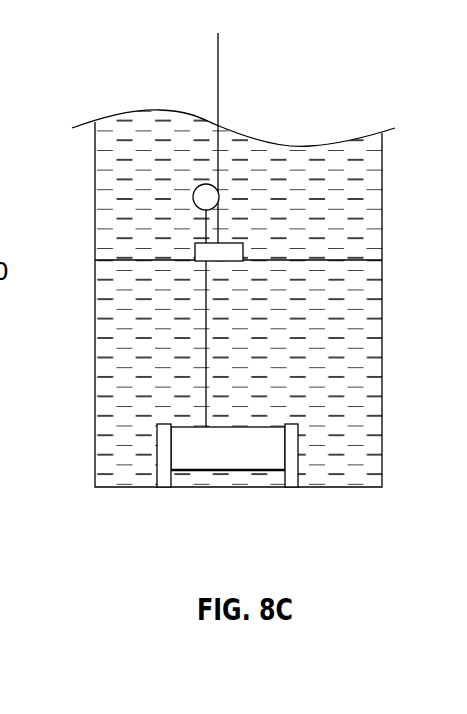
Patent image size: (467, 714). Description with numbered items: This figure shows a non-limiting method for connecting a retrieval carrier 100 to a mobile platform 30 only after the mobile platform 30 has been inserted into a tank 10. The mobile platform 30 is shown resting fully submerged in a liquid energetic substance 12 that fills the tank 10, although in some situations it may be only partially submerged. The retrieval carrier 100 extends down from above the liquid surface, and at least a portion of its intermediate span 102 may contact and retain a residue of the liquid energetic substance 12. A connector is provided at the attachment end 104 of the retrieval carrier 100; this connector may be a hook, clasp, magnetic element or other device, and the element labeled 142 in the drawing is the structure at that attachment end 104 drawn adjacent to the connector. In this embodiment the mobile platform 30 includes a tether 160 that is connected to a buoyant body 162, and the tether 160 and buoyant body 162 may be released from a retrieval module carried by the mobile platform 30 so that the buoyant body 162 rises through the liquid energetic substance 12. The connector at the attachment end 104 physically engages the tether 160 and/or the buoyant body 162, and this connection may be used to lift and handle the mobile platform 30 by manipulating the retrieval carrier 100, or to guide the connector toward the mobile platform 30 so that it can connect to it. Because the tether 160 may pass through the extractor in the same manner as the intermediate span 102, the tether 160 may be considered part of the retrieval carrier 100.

The retrieval carrier 100 is at (225, 58).
The intermediate span 102 is at (218, 154).
The buoyant body 162 is at (198, 183).
The sensor housing 142 is at (195, 253).
The attachment end 104 is at (220, 233).
The liquid energetic substance 12 is at (162, 353).
The tether 160 is at (208, 376).
The mobile platform 30 is at (152, 437).
The tank 10 is at (337, 488).